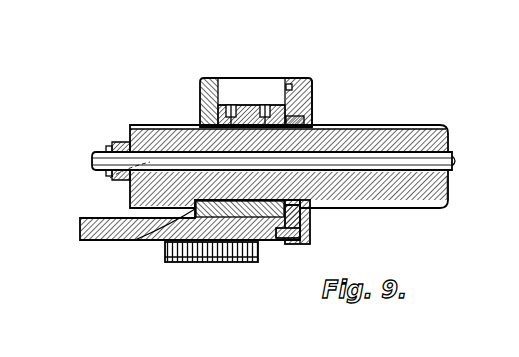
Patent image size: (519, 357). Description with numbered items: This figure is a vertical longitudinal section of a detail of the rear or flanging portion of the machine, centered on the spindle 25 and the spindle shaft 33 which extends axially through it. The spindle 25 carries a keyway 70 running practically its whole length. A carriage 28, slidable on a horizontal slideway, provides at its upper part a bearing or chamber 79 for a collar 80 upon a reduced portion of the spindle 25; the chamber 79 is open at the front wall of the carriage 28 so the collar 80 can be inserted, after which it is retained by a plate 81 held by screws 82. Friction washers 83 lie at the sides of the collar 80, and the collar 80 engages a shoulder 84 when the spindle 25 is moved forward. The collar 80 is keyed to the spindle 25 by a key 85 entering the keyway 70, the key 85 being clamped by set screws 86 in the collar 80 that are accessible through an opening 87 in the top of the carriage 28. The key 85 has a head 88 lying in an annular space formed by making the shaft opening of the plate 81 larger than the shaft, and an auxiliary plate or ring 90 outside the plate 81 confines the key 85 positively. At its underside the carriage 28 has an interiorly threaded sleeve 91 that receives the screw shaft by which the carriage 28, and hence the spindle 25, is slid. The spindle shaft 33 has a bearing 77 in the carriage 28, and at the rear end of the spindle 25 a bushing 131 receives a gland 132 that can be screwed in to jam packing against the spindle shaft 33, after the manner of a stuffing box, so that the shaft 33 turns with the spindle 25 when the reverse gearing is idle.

The spindle 25 is at (445, 197).
The carriage 28 is at (84, 221).
The spindle shaft 33 is at (445, 161).
The keyway 70 is at (398, 127).
The bearing 77 is at (112, 144).
The bearing or chamber 79 is at (146, 240).
The collar 80 is at (262, 241).
The plate 81 is at (298, 80).
The screws 82 is at (312, 95).
The friction washers 83 is at (306, 233).
The shoulder 84 is at (312, 216).
The key 85 is at (250, 105).
The set screws 86 is at (235, 105).
The opening 87 is at (258, 100).
The head 88 is at (312, 114).
The auxiliary plate or ring 90 is at (312, 81).
The threaded sleeve 91 is at (220, 264).
The bushing 131 is at (110, 147).
The gland 132 is at (108, 179).